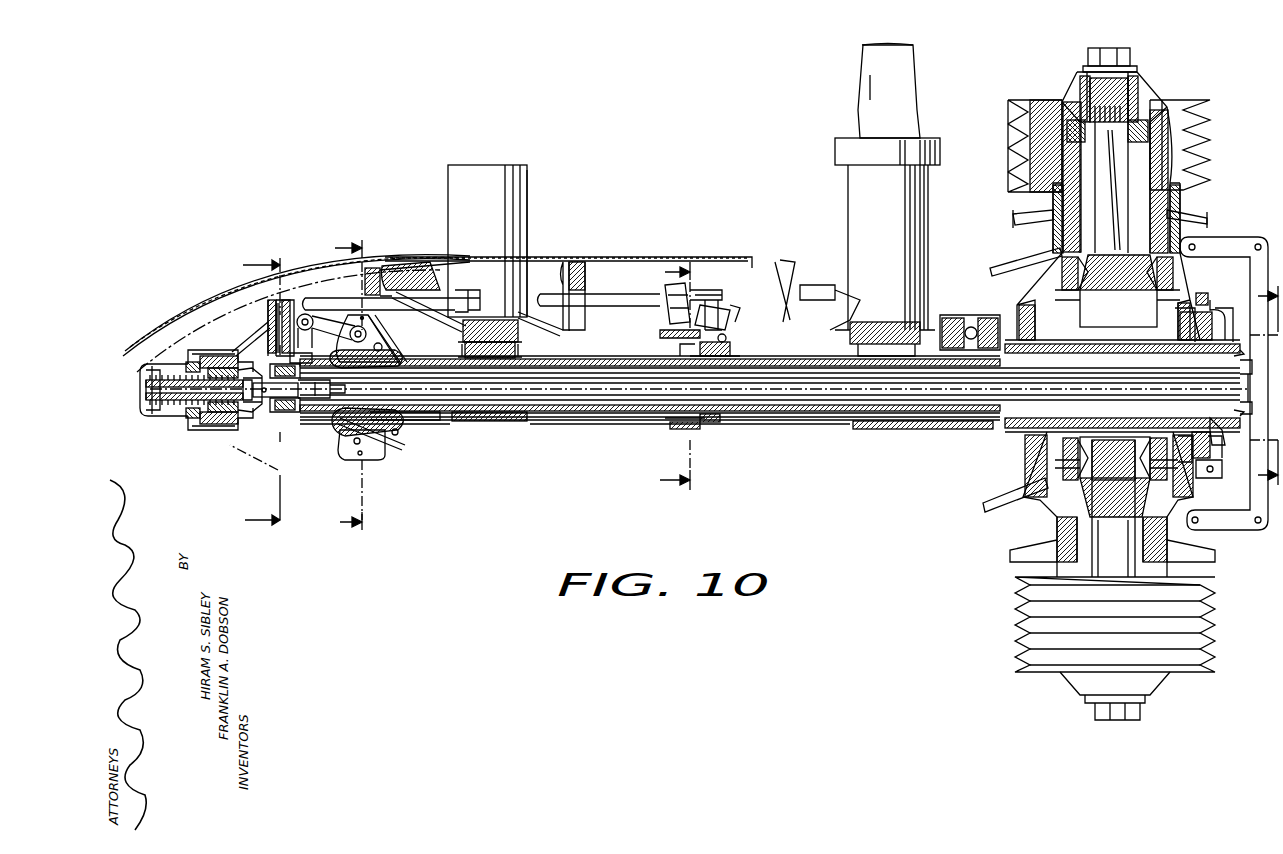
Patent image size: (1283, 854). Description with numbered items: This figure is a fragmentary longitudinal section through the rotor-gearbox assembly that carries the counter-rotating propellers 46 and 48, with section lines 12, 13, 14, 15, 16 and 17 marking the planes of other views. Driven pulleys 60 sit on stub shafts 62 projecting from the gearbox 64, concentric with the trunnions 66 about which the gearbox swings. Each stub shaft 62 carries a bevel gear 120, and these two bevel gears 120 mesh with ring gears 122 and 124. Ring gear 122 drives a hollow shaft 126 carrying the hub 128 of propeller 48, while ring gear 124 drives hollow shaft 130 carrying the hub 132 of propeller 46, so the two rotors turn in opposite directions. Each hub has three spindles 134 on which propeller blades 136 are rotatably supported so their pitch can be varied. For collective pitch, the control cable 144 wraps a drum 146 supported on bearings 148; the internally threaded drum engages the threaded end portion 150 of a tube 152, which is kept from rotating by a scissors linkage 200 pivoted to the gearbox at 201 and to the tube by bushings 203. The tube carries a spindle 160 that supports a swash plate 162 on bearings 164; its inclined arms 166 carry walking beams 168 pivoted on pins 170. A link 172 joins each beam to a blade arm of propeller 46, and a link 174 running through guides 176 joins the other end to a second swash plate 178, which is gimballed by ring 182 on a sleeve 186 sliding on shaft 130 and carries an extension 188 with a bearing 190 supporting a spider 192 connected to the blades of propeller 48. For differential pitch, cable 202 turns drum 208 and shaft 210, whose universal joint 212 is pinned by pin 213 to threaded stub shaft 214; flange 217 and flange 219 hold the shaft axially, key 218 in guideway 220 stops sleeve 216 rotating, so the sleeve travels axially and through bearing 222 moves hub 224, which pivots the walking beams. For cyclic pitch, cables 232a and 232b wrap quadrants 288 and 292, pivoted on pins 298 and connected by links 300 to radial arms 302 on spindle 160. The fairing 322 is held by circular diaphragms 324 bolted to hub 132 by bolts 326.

The section line 12 is at (255, 393).
The section line 13 is at (292, 430).
The section line 14 is at (345, 386).
The section line 15 is at (659, 376).
The section line 16 is at (1256, 382).
The section line 17 is at (1228, 383).
The propeller 46 is at (536, 224).
The propeller 48 is at (936, 244).
The driven pulley 60 is at (1210, 132).
The stub shaft 62 is at (1118, 125).
The gearbox 64 is at (1012, 505).
The trunnion 66 is at (1210, 222).
The bevel gear 120 is at (1127, 286).
The ring gear 122 is at (1068, 270).
The ring gear 124 is at (1165, 274).
The hollow shaft 126 is at (950, 428).
The hub 128 is at (915, 330).
The hollow shaft 130 is at (605, 336).
The hub 132 is at (520, 333).
The spindle 134 is at (472, 318).
The propeller blade 136 is at (508, 168).
The control cable 144 is at (1205, 465).
The drum 146 is at (1218, 332).
The bearing 148 is at (1207, 300).
The threaded end portion 150 is at (1135, 416).
The tube 152 is at (820, 340).
The spindle 160 is at (292, 412).
The swash plate 162 is at (226, 352).
The bearing 164 is at (196, 430).
The inclined arm 166 is at (275, 300).
The walking beam 168 is at (290, 305).
The pin 170 is at (281, 300).
The link 172 is at (425, 300).
The link 174 is at (645, 300).
The guide 176 is at (400, 272).
The swash plate 178 is at (676, 312).
The gimbal ring 182 is at (675, 427).
The sleeve 186 is at (712, 420).
The circumferential extension 188 is at (735, 350).
The bearing 190 is at (735, 340).
The spider 192 is at (722, 318).
The scissors linkage 200 is at (1232, 540).
The pivot 201 is at (1232, 525).
The cable 202 is at (1238, 380).
The bushing 203 is at (1222, 466).
The drum 208 is at (1228, 432).
The shaft 210 is at (633, 392).
The universal joint 212 is at (300, 400).
The pin 213 is at (270, 400).
The threaded stub shaft 214 is at (258, 415).
The internally threaded sleeve 216 is at (148, 412).
The flange 217 is at (238, 355).
The key 218 is at (232, 370).
The flange 219 is at (240, 420).
The guideway 220 is at (192, 362).
The bearing 222 is at (186, 420).
The hub 224 is at (138, 355).
The cable 232a is at (388, 426).
The cable 232b is at (390, 350).
The quadrant 288 is at (395, 455).
The quadrant 292 is at (382, 352).
The pin 298 is at (370, 266).
The link 300 is at (360, 316).
The radial arm 302 is at (305, 316).
The fairing 322 is at (648, 257).
The circular diaphragm 324 is at (384, 262).
The bolt 326 is at (520, 350).